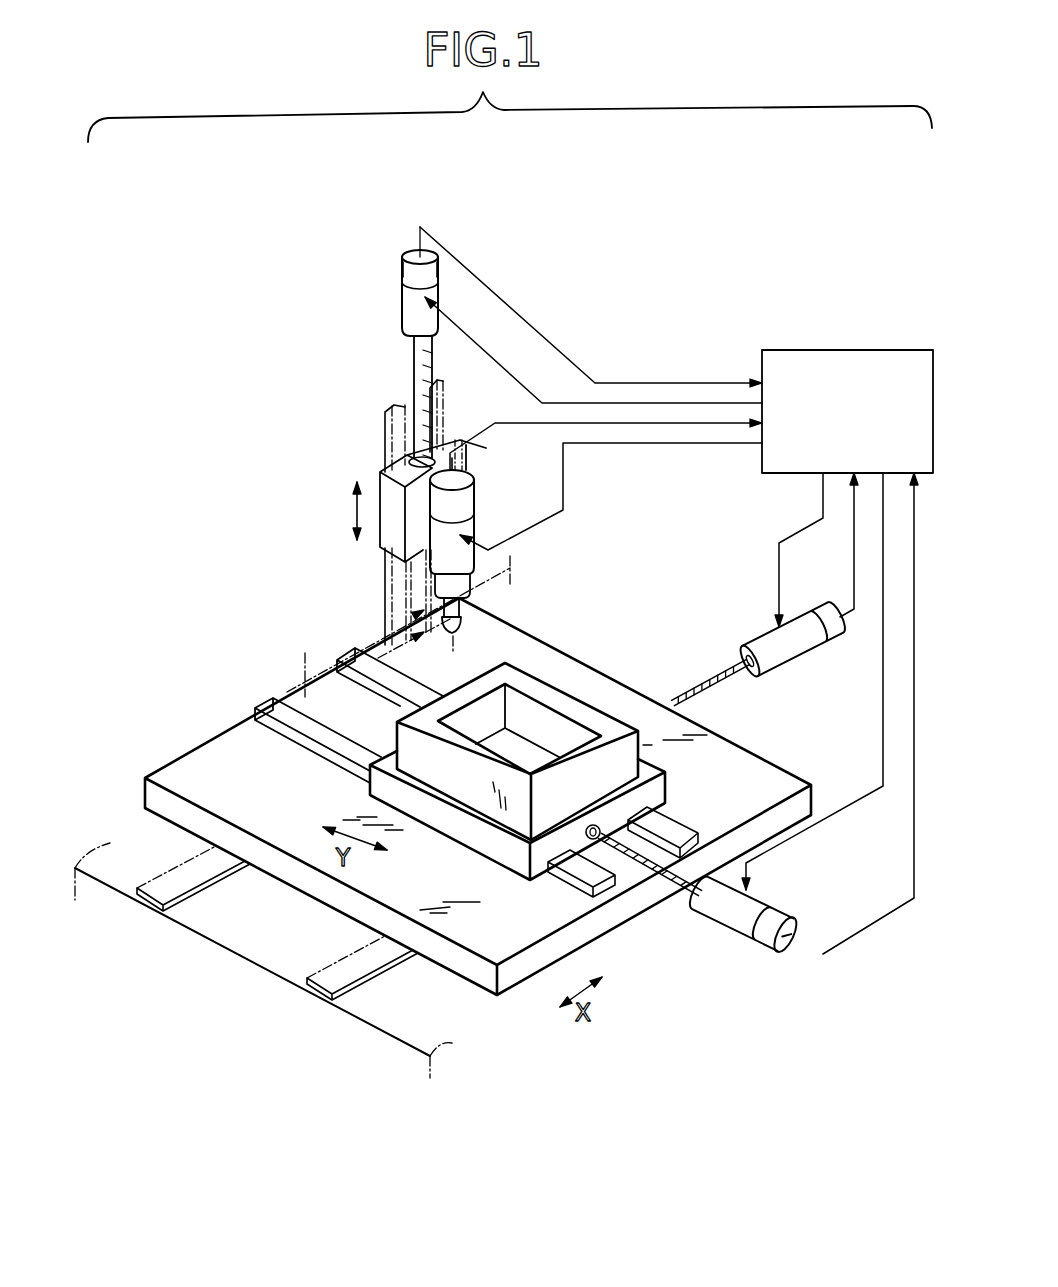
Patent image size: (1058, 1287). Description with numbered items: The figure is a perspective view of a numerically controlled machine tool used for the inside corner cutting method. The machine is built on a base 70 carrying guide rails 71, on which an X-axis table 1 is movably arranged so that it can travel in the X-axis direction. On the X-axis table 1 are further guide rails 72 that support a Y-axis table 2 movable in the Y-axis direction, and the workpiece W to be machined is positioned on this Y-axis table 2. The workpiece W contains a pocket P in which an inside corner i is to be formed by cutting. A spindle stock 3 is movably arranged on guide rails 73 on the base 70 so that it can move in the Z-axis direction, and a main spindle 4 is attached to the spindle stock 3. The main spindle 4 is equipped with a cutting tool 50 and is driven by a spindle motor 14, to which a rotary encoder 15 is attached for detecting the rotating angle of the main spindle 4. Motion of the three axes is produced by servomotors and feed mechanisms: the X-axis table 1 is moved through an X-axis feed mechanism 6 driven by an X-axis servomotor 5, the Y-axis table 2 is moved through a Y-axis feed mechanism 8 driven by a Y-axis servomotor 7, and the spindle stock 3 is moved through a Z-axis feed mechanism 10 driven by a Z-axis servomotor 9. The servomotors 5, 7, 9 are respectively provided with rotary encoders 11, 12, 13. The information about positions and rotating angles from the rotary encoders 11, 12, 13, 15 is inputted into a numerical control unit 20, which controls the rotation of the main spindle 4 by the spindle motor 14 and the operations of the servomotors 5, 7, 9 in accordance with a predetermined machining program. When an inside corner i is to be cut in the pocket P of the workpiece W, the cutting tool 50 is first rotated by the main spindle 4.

The X-axis table 1 is at (783, 767).
The Y-axis table 2 is at (672, 793).
The spindle stock 3 is at (380, 540).
The main spindle 4 is at (470, 590).
The X-axis servomotor 5 is at (783, 679).
The X-axis feed mechanism 6 is at (726, 694).
The Y-axis servomotor 7 is at (733, 930).
The Y-axis feed mechanism 8 is at (643, 868).
The Z-axis servomotor 9 is at (402, 318).
The Z-axis feed mechanism 10 is at (414, 378).
The rotary encoder 11 is at (831, 640).
The rotary encoder 12 is at (772, 913).
The rotary encoder 13 is at (401, 283).
The spindle motor 14 is at (470, 525).
The rotary encoder 15 is at (468, 503).
The numerical control unit 20 is at (797, 350).
The cutting tool 50 is at (414, 632).
The base 70 is at (388, 1053).
The guide rails 71 is at (186, 905).
The guide rails 72 is at (342, 647).
The guide rails 73 is at (385, 437).
The workpiece W is at (538, 690).
The pocket P is at (563, 727).
The inside corner i is at (505, 662).